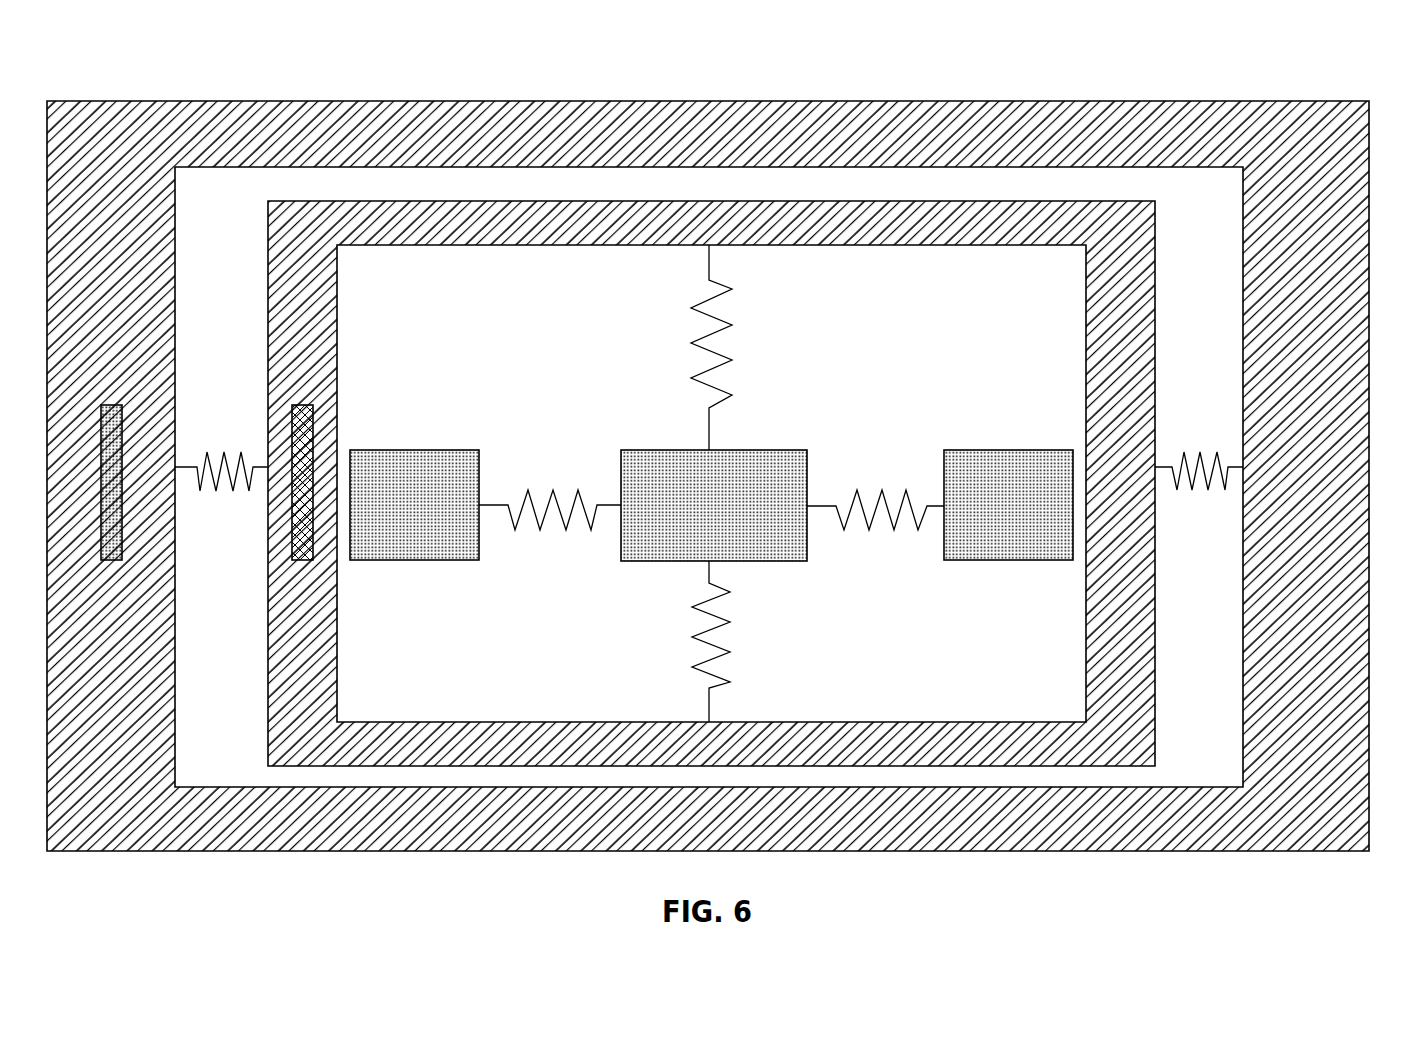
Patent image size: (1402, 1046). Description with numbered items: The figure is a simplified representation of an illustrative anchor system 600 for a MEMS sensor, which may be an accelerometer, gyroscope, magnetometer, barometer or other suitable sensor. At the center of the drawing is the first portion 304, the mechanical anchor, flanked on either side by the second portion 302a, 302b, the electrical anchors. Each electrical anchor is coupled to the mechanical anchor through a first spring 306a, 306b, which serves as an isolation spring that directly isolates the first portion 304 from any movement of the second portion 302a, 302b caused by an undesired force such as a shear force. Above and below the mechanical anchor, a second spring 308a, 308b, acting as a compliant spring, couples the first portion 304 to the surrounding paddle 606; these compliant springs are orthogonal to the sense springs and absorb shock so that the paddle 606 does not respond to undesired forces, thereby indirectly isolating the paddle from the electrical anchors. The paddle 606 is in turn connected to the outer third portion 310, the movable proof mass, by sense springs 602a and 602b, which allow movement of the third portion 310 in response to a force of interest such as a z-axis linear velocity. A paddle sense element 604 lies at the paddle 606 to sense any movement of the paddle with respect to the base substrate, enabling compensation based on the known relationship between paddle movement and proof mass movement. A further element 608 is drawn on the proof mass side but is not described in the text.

The anchor system 600 is at (128, 36).
The third portion 310 is at (732, 831).
The paddle 606 is at (322, 722).
The second portion 302a is at (445, 517).
The second portion 302b is at (1040, 517).
The first portion 304 is at (737, 517).
The first spring 306a is at (553, 489).
The first spring 306b is at (882, 489).
The second spring 308a is at (692, 343).
The second spring 308b is at (692, 637).
The sense spring 602a is at (241, 451).
The sense spring 602b is at (1216, 451).
The paddle sense element 604 is at (303, 560).
The electrode on outer frame 608 is at (103, 560).